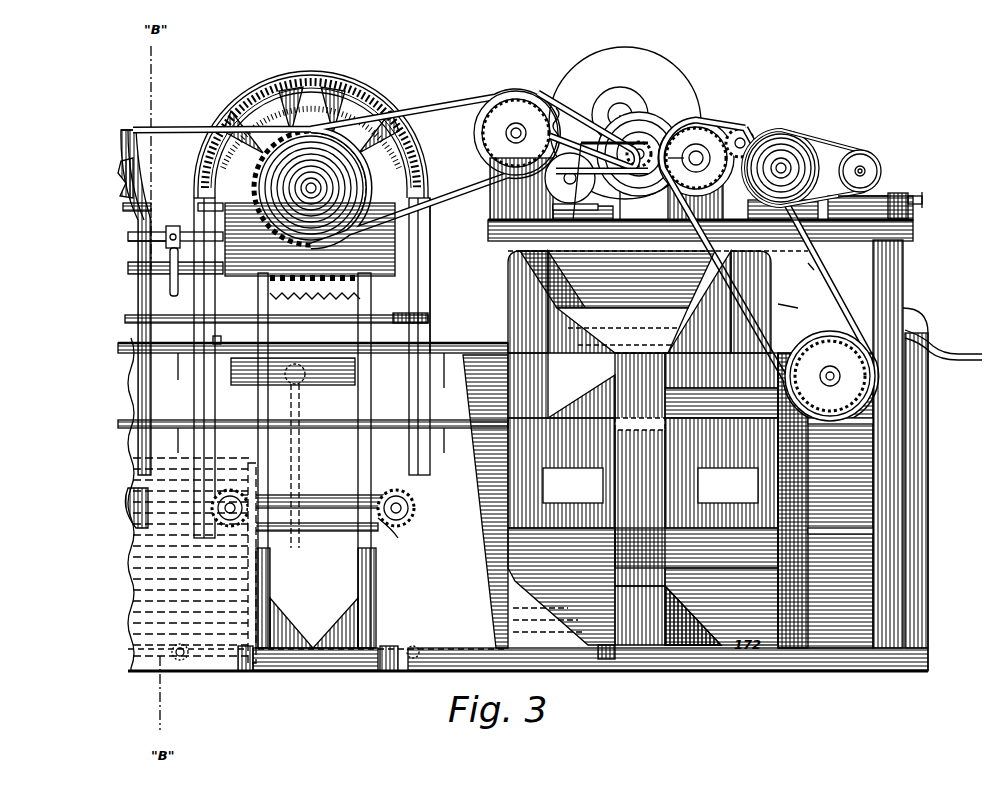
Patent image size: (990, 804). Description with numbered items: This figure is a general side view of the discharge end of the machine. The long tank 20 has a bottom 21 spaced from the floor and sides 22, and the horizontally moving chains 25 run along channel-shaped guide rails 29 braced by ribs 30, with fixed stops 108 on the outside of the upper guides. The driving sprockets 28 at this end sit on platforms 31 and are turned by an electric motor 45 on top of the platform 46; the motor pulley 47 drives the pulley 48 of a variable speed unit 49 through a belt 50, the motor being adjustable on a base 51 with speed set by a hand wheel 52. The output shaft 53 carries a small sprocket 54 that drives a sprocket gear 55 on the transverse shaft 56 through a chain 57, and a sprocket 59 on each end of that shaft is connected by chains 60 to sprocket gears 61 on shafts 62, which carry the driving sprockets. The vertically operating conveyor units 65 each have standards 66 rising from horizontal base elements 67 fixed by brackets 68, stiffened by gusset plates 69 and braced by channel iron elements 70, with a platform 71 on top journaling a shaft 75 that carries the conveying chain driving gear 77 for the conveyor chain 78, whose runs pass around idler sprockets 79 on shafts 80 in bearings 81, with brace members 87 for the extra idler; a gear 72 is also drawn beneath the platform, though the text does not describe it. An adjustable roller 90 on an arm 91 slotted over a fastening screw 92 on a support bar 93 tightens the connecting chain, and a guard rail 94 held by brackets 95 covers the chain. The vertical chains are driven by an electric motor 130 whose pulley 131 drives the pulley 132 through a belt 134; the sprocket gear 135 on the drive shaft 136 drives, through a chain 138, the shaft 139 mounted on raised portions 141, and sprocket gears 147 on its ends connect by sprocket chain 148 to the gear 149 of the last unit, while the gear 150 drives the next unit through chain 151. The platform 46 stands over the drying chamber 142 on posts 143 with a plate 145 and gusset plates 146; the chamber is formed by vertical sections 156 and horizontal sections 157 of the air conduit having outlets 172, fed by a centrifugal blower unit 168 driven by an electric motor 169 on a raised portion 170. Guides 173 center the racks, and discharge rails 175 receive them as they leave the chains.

The tank 20 is at (400, 660).
The bottom 21 is at (198, 676).
The sides 22 is at (456, 676).
The horizontally moving chains 25 is at (296, 396).
The driving sprockets 28 is at (868, 392).
The channel-shaped guide rails 29 is at (455, 306).
The ribs 30 is at (432, 372).
The platforms 31 is at (868, 496).
The electric motor 45 is at (874, 180).
The platform 46 is at (820, 210).
The motor pulley 47 is at (858, 150).
The pulley 48 is at (783, 152).
The variable speed unit 49 is at (818, 130).
The belt 50 is at (814, 140).
The base 51 is at (890, 183).
The hand wheel 52 is at (912, 186).
The output shaft 53 is at (790, 138).
The small sprocket 54 is at (775, 142).
The sprocket gear 55 is at (692, 122).
The shaft 56 is at (700, 140).
The chain 57 is at (735, 122).
The sprocket 59 is at (738, 105).
The chains 60 is at (814, 262).
The sprocket gears 61 is at (841, 371).
The shaft 62 is at (825, 385).
The vertically operating conveyor units 65 is at (350, 72).
The standards 66 is at (372, 391).
The horizontal base elements 67 is at (330, 655).
The brackets 68 is at (236, 663).
The gusset plates 69 is at (280, 640).
The channel iron elements 70 is at (322, 490).
The platform 71 is at (255, 255).
The gear 72 is at (315, 288).
The shaft 75 is at (306, 235).
The conveying chain driving gear 77 is at (318, 92).
The conveyor chain 78 is at (330, 524).
The idler sprockets 79 is at (404, 496).
The shafts 80 is at (404, 504).
The bearings 81 is at (402, 520).
The brace members 87 is at (313, 355).
The adjustable roller 90 is at (168, 218).
The arm 91 is at (160, 240).
The fastening screw 92 is at (160, 270).
The support bar 93 is at (120, 260).
The guard rail 94 is at (258, 74).
The brackets 95 is at (396, 306).
The fixed stops 108 is at (205, 331).
The electric motor 130 is at (555, 170).
The pulley 131 is at (470, 219).
The pulley 132 is at (640, 128).
The belt 134 is at (578, 130).
The sprocket gear 135 is at (700, 228).
The drive shaft 136 is at (613, 95).
The chain 138 is at (555, 100).
The shaft 139 is at (512, 118).
The raised portions 141 is at (500, 181).
The drying chamber 142 is at (795, 290).
The posts 143 is at (630, 380).
The plate 145 is at (895, 308).
The gusset plates 146 is at (920, 606).
The sprocket gear 147 is at (490, 128).
The sprocket chain 148 is at (445, 106).
The gear 149 is at (338, 160).
The gear 150 is at (311, 195).
The chain 151 is at (196, 120).
The vertical sections 156 is at (540, 570).
The horizontal conduit sections 157 is at (530, 455).
The centrifugal blower unit 168 is at (640, 60).
The electric motor 169 is at (636, 106).
The raised portion 170 is at (562, 250).
The outlets 172 is at (530, 283).
The guides 173 is at (548, 352).
The discharge rails 175 is at (965, 360).